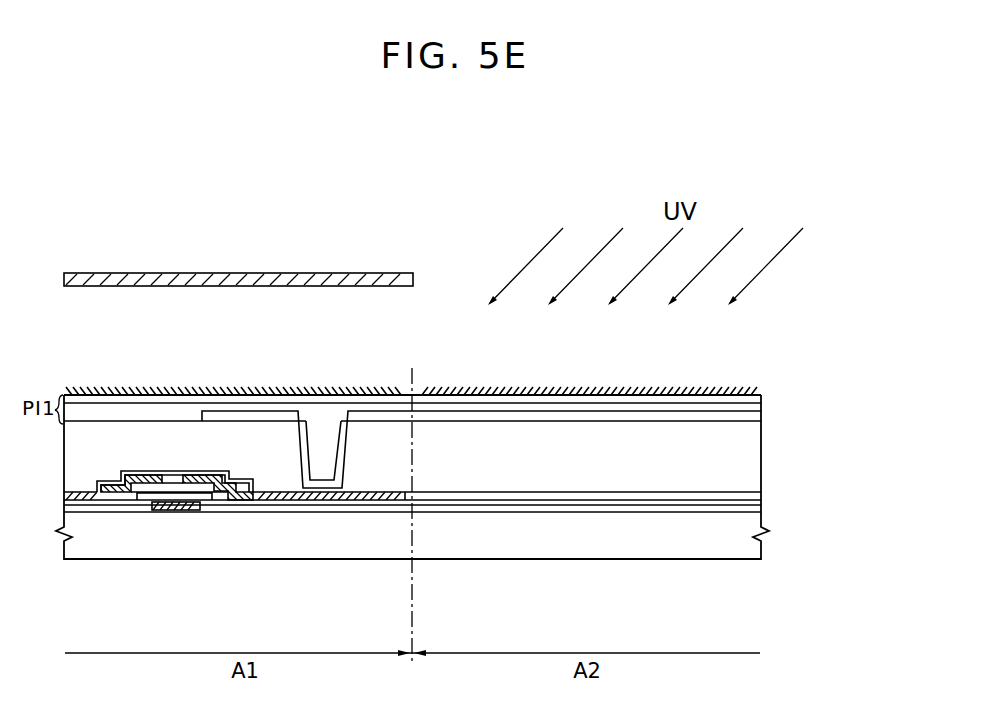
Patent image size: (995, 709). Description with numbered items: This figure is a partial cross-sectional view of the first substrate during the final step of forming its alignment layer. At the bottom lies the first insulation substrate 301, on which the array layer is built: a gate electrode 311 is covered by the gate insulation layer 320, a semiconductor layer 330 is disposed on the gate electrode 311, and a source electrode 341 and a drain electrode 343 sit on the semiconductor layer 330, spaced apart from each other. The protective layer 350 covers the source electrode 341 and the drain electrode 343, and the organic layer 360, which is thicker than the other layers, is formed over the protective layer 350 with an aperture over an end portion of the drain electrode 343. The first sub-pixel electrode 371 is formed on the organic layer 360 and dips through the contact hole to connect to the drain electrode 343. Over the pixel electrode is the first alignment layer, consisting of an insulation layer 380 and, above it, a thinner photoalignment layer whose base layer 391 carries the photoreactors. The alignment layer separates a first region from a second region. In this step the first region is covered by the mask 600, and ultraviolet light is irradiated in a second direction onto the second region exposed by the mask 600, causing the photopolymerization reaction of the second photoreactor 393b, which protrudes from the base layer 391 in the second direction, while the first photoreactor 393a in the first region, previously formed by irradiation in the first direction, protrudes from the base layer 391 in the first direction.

The first insulation substrate 301 is at (773, 545).
The gate electrode 311 is at (160, 512).
The gate insulation layer 320 is at (773, 505).
The semiconductor layer 330 is at (220, 502).
The source electrode 341 is at (85, 496).
The drain electrode 343 is at (322, 495).
The protective layer 350 is at (773, 495).
The organic layer 360 is at (773, 456).
The first sub-pixel electrode 371 is at (773, 416).
The insulation layer 380 is at (773, 403).
The base layer 391 is at (763, 393).
The first photoreactor 393a is at (204, 390).
The second photoreactor 393b is at (595, 390).
The mask 600 is at (210, 282).